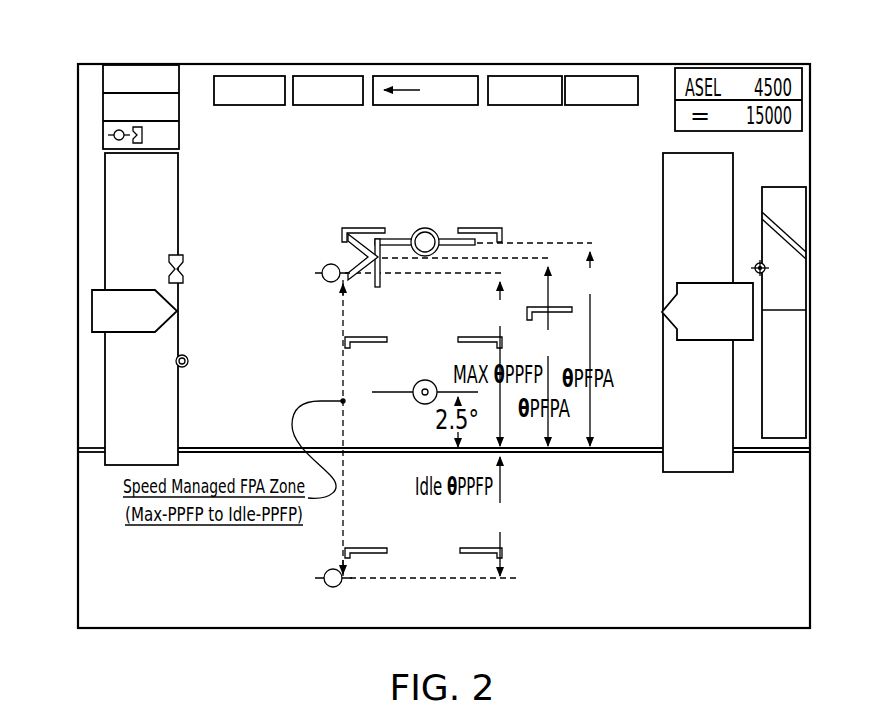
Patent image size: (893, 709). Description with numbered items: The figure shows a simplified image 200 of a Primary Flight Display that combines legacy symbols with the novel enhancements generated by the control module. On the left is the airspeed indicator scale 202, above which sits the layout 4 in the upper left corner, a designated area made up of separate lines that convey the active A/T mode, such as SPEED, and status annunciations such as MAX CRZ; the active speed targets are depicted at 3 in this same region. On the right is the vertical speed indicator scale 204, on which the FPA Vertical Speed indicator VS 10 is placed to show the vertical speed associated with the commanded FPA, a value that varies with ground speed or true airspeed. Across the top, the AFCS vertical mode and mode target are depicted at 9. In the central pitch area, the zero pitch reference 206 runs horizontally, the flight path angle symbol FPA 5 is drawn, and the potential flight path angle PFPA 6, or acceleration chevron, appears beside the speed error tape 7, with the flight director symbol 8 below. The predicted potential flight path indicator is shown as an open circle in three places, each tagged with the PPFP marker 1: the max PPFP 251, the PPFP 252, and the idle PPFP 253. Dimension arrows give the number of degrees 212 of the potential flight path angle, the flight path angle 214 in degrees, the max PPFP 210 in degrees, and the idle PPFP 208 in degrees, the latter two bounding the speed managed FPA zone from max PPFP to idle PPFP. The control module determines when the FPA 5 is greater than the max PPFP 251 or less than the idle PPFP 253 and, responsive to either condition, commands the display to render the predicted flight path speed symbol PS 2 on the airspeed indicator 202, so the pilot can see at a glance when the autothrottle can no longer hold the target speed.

The image of a Primary Flight Display 200 is at (467, 64).
The airspeed indicator scale 202 is at (140, 265).
The vertical speed indicator scale 204 is at (790, 407).
The zero pitch reference 206 is at (618, 453).
The idle PPFP 208 is at (498, 516).
The max PPFP 210 is at (500, 364).
The number of degrees of the potential flight path angle 212 is at (548, 356).
The flight path angle 214 is at (590, 349).
The max PPFP indicator 251 is at (329, 284).
The PPFP indicator 252 is at (120, 151).
The idle PPFP indicator 253 is at (327, 567).
The speed managed symbols 1 is at (230, 358).
The predicted flight path speed indicator (PS) 2 is at (192, 361).
The active speed targets 3 is at (190, 268).
The layout for A/T modes and annunciations 4 is at (217, 100).
The flight path angle (FPA) symbol 5 is at (433, 222).
The potential flight path angle (PFPA) symbol 6 is at (363, 226).
The speed error tape 7 is at (384, 284).
The flight director symbol 8 is at (398, 397).
The AFCS vertical mode and mode target 9 is at (488, 107).
The FPA Vertical Speed indicator 10 is at (756, 263).